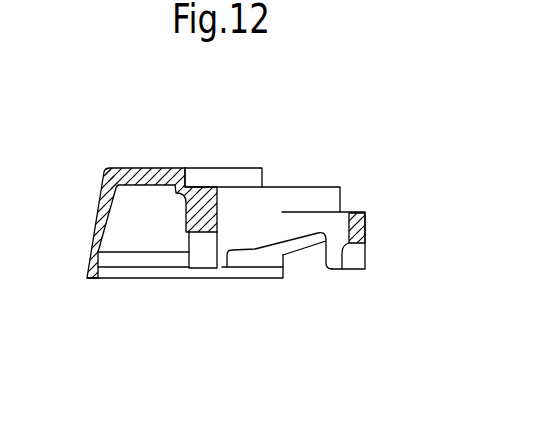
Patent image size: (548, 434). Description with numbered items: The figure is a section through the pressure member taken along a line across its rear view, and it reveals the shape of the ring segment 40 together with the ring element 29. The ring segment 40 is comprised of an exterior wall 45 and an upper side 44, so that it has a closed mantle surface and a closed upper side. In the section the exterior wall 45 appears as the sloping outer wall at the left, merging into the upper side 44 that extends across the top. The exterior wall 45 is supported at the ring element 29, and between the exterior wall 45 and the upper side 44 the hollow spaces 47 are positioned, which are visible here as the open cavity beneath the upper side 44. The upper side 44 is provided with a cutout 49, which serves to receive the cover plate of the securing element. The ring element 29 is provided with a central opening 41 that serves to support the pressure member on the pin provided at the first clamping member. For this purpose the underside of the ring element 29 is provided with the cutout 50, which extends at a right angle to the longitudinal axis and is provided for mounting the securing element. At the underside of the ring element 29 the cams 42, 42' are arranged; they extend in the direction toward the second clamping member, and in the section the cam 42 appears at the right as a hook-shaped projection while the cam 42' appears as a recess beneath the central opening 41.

The ring segment 40 is at (113, 154).
The exterior wall 45 is at (102, 194).
The upper side 44 is at (153, 168).
The central opening 41 is at (221, 207).
The cutout 49 is at (196, 184).
The hollow spaces 47 is at (138, 230).
The cam 42' is at (200, 286).
The ring element 29 is at (367, 237).
The cutout 50 is at (351, 211).
The cam 42 is at (285, 287).